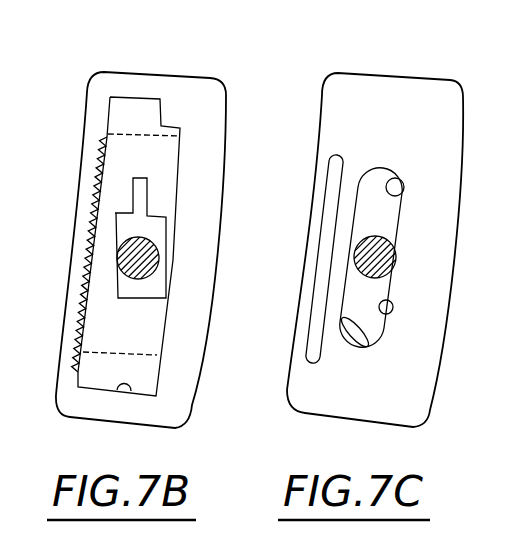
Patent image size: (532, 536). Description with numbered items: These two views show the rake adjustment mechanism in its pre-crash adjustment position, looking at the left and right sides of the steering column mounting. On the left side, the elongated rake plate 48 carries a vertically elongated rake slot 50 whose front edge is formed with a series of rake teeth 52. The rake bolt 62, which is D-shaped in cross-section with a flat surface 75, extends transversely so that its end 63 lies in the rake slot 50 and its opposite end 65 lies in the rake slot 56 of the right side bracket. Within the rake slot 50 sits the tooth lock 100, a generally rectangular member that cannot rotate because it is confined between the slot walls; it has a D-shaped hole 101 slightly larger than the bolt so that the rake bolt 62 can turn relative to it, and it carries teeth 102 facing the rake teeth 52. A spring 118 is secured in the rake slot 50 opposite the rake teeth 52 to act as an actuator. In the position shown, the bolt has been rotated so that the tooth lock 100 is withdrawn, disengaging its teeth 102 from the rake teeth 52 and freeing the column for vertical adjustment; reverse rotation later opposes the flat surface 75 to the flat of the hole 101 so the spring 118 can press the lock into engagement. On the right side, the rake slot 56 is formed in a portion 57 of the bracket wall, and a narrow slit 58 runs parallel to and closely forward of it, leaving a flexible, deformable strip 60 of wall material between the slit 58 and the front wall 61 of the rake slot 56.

In FIG. 7B, the rake plate 48 is at (173, 82).
In FIG. 7B, the rake slot 50 is at (120, 389).
In FIG. 7B, the rake teeth 52 is at (96, 322).
In FIG. 7C, the rake slot 56 is at (392, 173).
In FIG. 7C, the portion of the wall 57 is at (422, 87).
In FIG. 7C, the narrow slit 58 is at (335, 196).
In FIG. 7C, the deformable strip 60 is at (338, 266).
In FIG. 7C, the front wall 61 is at (358, 345).
In FIG. 7B, the rake bolt 62 is at (126, 246).
In FIG. 7C, the rake bolt 62 is at (363, 243).
In FIG. 7B, the end of the rake bolt 63 is at (116, 262).
In FIG. 7C, the end of the rake bolt 65 is at (397, 238).
In FIG. 7C, the flat surface 75 is at (380, 271).
In FIG. 7B, the tooth lock 100 is at (150, 185).
In FIG. 7B, the D-shaped hole 101 is at (143, 282).
In FIG. 7B, the teeth 102 is at (103, 222).
In FIG. 7B, the spring 118 is at (175, 243).